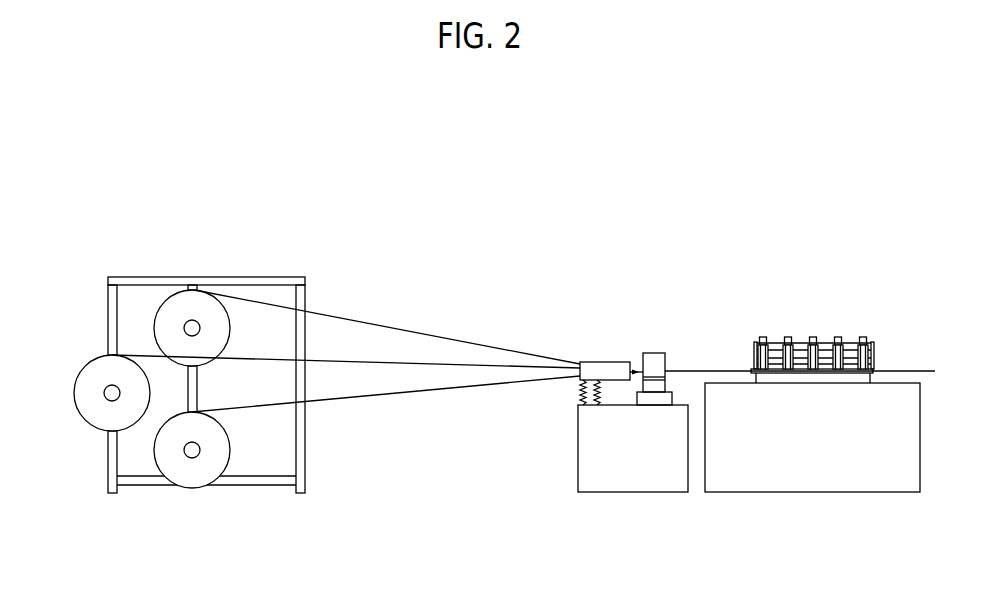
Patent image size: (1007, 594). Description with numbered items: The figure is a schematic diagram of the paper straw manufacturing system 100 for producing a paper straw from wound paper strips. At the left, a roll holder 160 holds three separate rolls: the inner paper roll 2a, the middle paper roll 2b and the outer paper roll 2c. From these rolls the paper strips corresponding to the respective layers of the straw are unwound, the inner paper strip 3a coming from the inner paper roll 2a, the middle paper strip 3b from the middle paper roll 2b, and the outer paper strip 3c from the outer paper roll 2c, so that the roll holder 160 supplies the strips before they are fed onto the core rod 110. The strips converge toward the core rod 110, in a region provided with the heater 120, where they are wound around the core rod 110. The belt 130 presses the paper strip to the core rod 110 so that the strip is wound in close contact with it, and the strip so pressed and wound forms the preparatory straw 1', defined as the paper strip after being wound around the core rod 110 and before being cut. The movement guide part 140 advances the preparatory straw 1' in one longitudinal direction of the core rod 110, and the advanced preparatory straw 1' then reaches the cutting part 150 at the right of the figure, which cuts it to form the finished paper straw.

The paper straw manufacturing system 100 is at (115, 176).
The roll holder 160 is at (171, 265).
The inner paper roll 2a is at (148, 318).
The middle paper roll 2b is at (78, 388).
The outer paper roll 2c is at (185, 491).
The inner paper strip 3a is at (350, 318).
The middle paper strip 3b is at (428, 364).
The outer paper strip 3c is at (380, 398).
The heater 120 is at (589, 359).
The movement guide part 140 is at (637, 368).
The core rod 110 is at (633, 431).
The belt 130 is at (657, 350).
The preparatory straw 1' is at (800, 342).
The cutting part 150 is at (820, 318).